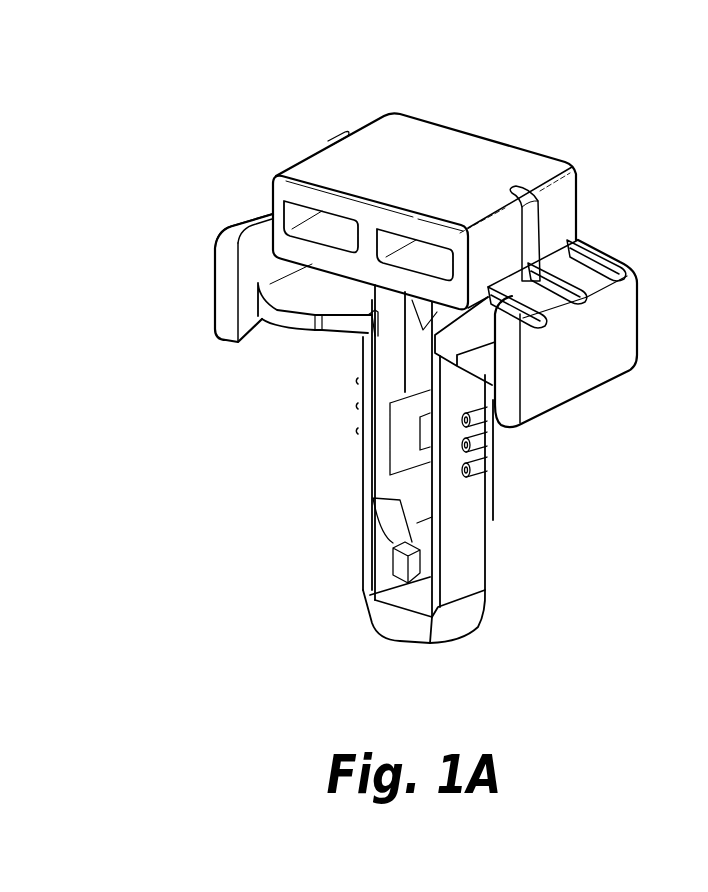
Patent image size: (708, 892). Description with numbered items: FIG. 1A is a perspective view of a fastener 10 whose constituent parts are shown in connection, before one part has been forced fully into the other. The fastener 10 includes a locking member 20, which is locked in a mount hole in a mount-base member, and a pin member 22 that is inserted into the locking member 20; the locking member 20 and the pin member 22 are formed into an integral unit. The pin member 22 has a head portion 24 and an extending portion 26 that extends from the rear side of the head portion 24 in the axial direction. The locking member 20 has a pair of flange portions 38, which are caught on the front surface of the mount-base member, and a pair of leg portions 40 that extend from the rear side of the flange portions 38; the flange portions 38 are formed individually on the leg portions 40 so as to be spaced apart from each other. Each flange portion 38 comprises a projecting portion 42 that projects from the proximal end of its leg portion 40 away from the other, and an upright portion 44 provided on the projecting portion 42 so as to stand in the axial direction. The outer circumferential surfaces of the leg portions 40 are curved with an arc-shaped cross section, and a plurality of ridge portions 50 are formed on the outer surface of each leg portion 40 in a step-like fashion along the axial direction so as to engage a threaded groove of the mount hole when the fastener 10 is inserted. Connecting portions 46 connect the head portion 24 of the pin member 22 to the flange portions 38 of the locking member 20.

The fastener 10 is at (491, 682).
The locking member 20 is at (470, 513).
The pin member 22 is at (462, 158).
The head portion 24 is at (418, 137).
The extending portion 26 is at (386, 390).
The flange portion 38 is at (230, 303).
The leg portion 40 is at (357, 568).
The projecting portion 42 is at (316, 290).
The upright portion 44 is at (223, 283).
The connecting portion 46 is at (582, 238).
The ridge portion 50 is at (487, 440).